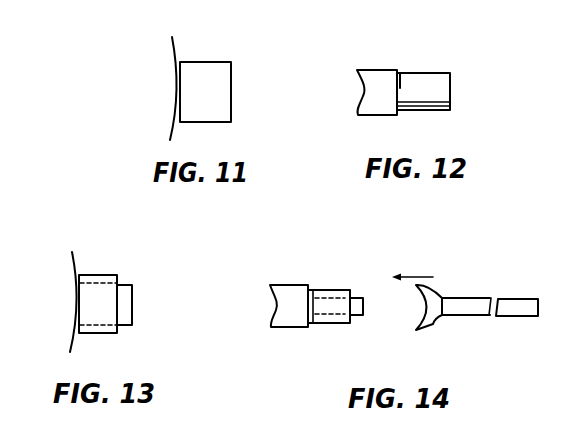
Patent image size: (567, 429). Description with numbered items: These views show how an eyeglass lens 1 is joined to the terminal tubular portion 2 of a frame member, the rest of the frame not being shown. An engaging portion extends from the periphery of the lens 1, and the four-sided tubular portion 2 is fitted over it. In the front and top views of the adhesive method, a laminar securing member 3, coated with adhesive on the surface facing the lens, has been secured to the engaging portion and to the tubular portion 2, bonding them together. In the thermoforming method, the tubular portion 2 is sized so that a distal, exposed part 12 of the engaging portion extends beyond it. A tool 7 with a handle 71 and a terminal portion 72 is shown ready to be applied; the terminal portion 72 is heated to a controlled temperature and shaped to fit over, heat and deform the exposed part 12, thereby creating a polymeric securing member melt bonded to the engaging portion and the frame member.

In FIG. 11, the eyeglass lens 1 is at (154, 88).
In FIG. 12, the eyeglass lens 1 is at (375, 70).
In FIG. 13, the eyeglass lens 1 is at (54, 302).
In FIG. 14, the eyeglass lens 1 is at (290, 285).
In FIG. 12, the terminal tubular portion of a frame member 2 is at (421, 73).
In FIG. 13, the terminal tubular portion of a frame member 2 is at (107, 275).
In FIG. 14, the terminal tubular portion of a frame member 2 is at (332, 290).
In FIG. 11, the laminar securing member 3 is at (212, 101).
In FIG. 12, the laminar securing member 3 is at (450, 106).
In FIG. 13, the exposed part of the engaging portion 12 is at (123, 302).
In FIG. 14, the exposed part of the engaging portion 12 is at (360, 315).
In FIG. 14, the tool 7 is at (477, 294).
In FIG. 14, the handle 71 is at (522, 316).
In FIG. 14, the terminal portion 72 is at (433, 325).